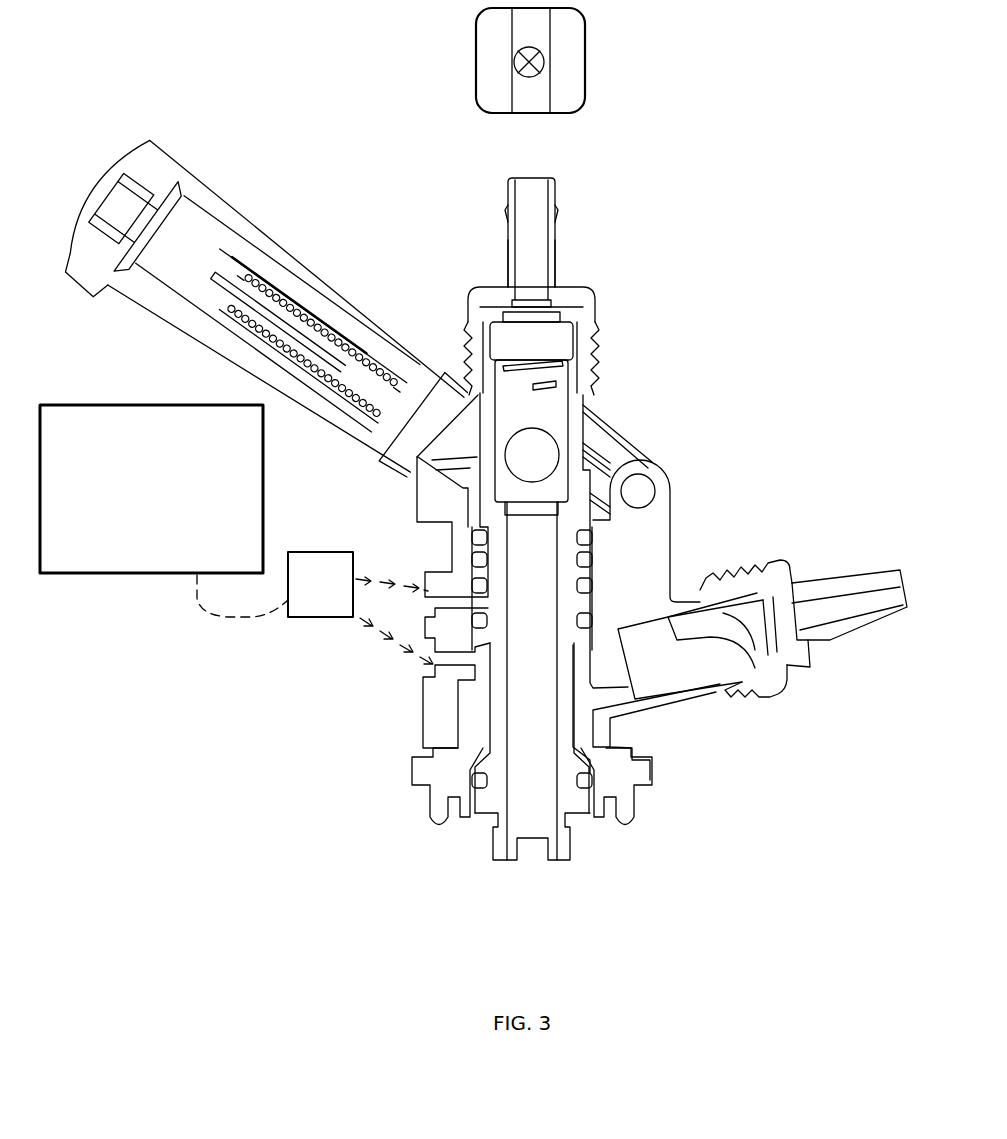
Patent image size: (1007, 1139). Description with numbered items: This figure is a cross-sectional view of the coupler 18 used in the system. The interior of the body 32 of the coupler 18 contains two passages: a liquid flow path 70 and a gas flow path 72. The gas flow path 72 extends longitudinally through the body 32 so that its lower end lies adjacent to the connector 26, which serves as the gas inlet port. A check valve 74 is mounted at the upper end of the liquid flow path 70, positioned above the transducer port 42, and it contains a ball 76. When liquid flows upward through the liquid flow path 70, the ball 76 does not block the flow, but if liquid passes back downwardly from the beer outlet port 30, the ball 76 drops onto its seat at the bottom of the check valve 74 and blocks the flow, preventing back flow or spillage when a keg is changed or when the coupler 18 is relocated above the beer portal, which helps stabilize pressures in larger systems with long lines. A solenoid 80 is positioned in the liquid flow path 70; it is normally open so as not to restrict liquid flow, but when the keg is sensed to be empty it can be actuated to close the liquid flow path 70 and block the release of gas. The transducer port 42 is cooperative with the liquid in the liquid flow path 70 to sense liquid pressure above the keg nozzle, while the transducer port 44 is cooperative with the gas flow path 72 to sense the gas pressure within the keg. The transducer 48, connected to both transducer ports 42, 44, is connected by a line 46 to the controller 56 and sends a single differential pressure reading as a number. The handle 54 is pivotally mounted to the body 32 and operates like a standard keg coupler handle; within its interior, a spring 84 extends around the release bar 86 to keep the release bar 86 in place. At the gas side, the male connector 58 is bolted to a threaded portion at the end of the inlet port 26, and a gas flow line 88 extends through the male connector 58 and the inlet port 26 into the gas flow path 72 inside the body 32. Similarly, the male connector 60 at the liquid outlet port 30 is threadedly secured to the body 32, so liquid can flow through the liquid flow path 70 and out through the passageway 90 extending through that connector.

The coupler 18 is at (573, 415).
The connector 26 is at (627, 813).
The beer outlet port 30 is at (555, 210).
The body 32 is at (572, 372).
The transducer port 42 is at (430, 595).
The transducer port 44 is at (440, 655).
The line 46 is at (282, 598).
The transducer 48 is at (320, 605).
The handle 54 is at (288, 268).
The controller 56 is at (162, 402).
The male connector 58 is at (843, 578).
The male connector 60 is at (510, 197).
The liquid flow path 70 is at (546, 645).
The gas flow path 72 is at (485, 713).
The check valve 74 is at (548, 415).
The ball 76 is at (537, 452).
The solenoid 80 is at (542, 66).
The spring 84 is at (337, 337).
The release bar 86 is at (202, 265).
The gas flow line 88 is at (877, 592).
The passageway 90 is at (535, 182).